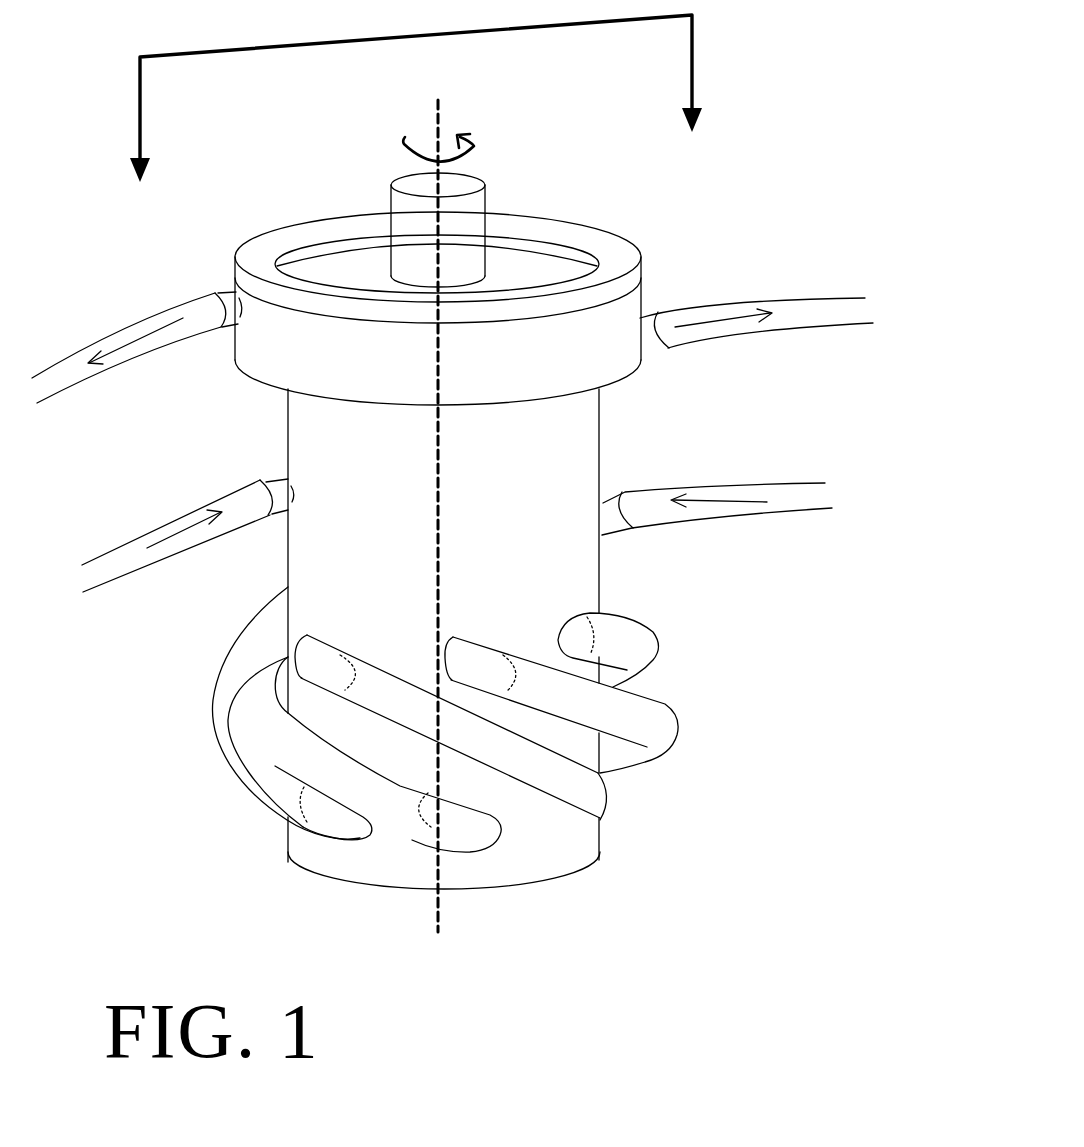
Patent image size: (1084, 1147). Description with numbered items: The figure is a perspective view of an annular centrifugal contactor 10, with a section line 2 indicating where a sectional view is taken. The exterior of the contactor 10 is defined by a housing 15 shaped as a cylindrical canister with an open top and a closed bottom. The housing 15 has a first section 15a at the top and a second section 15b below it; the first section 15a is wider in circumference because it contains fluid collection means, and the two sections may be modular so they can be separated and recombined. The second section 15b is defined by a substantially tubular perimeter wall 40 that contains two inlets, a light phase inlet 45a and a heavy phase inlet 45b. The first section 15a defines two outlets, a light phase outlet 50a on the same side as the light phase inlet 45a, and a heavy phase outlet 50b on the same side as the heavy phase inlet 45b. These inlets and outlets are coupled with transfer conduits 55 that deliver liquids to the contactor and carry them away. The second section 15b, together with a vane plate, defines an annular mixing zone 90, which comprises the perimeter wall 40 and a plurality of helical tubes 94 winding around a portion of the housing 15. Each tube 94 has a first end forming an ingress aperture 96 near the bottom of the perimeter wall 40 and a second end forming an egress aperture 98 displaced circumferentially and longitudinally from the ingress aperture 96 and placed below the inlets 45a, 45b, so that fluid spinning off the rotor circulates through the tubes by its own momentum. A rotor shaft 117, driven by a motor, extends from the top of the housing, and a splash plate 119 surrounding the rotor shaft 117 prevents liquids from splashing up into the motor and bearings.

The section line 2- 2 is at (411, 94).
The annular centrifugal contactor 10 is at (281, 197).
The housing 15 is at (435, 540).
The first section 15a is at (419, 309).
The second section 15b is at (345, 566).
The perimeter wall 40 is at (495, 569).
The light phase inlet 45a is at (605, 518).
The heavy phase inlet 45b is at (282, 500).
The light phase outlet 50a is at (648, 345).
The heavy phase outlet 50b is at (228, 300).
The transfer conduits 55 is at (162, 415).
The annular mixing zone 90 is at (421, 759).
The helical tubes 94 is at (632, 720).
The ingress aperture 96 is at (468, 834).
The egress aperture 98 is at (333, 672).
The rotor shaft 117 is at (466, 222).
The splash plate 119 is at (528, 272).